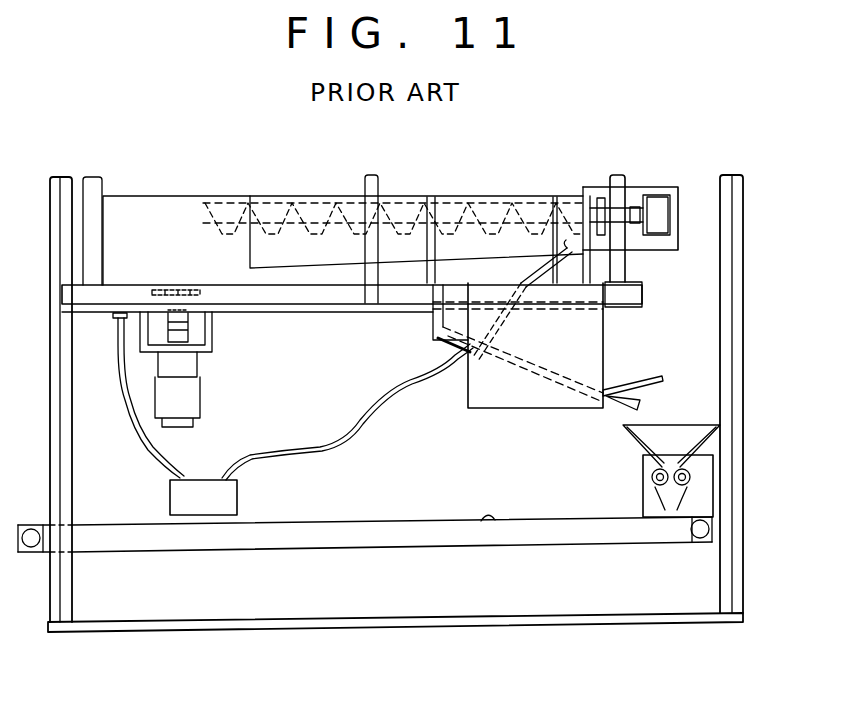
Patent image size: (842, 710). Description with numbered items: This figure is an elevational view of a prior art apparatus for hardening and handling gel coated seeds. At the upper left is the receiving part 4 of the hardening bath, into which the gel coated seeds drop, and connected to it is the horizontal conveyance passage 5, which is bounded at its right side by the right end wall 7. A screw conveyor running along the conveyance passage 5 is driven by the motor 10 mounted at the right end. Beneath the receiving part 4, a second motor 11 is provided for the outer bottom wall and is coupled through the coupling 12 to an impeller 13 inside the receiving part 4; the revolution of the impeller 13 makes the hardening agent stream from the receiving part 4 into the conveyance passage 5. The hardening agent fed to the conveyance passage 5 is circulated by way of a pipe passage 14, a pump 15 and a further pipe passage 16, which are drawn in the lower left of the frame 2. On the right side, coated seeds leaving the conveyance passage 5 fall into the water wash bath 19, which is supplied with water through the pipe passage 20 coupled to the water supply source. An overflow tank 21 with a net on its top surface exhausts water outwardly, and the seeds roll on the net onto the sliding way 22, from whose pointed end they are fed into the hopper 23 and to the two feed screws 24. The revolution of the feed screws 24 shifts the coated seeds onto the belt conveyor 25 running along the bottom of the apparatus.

The frame 2 is at (97, 313).
The receiving part 4 is at (183, 210).
The conveyance passage 5 is at (345, 248).
The right end wall 7 is at (628, 265).
The motor 10 is at (663, 222).
The motor 11 is at (192, 397).
The coupling 12 is at (188, 332).
The impeller 13 is at (168, 290).
The pipe passage 14 is at (368, 415).
The pump 15 is at (237, 493).
The pipe passage 16 is at (135, 440).
The water wash bath 19 is at (607, 323).
The pipe passage 20 is at (647, 377).
The overflow tank 21 is at (447, 343).
The sliding way 22 is at (513, 363).
The hopper 23 is at (687, 427).
The feed screws 24 is at (650, 473).
The belt conveyor 25 is at (487, 523).